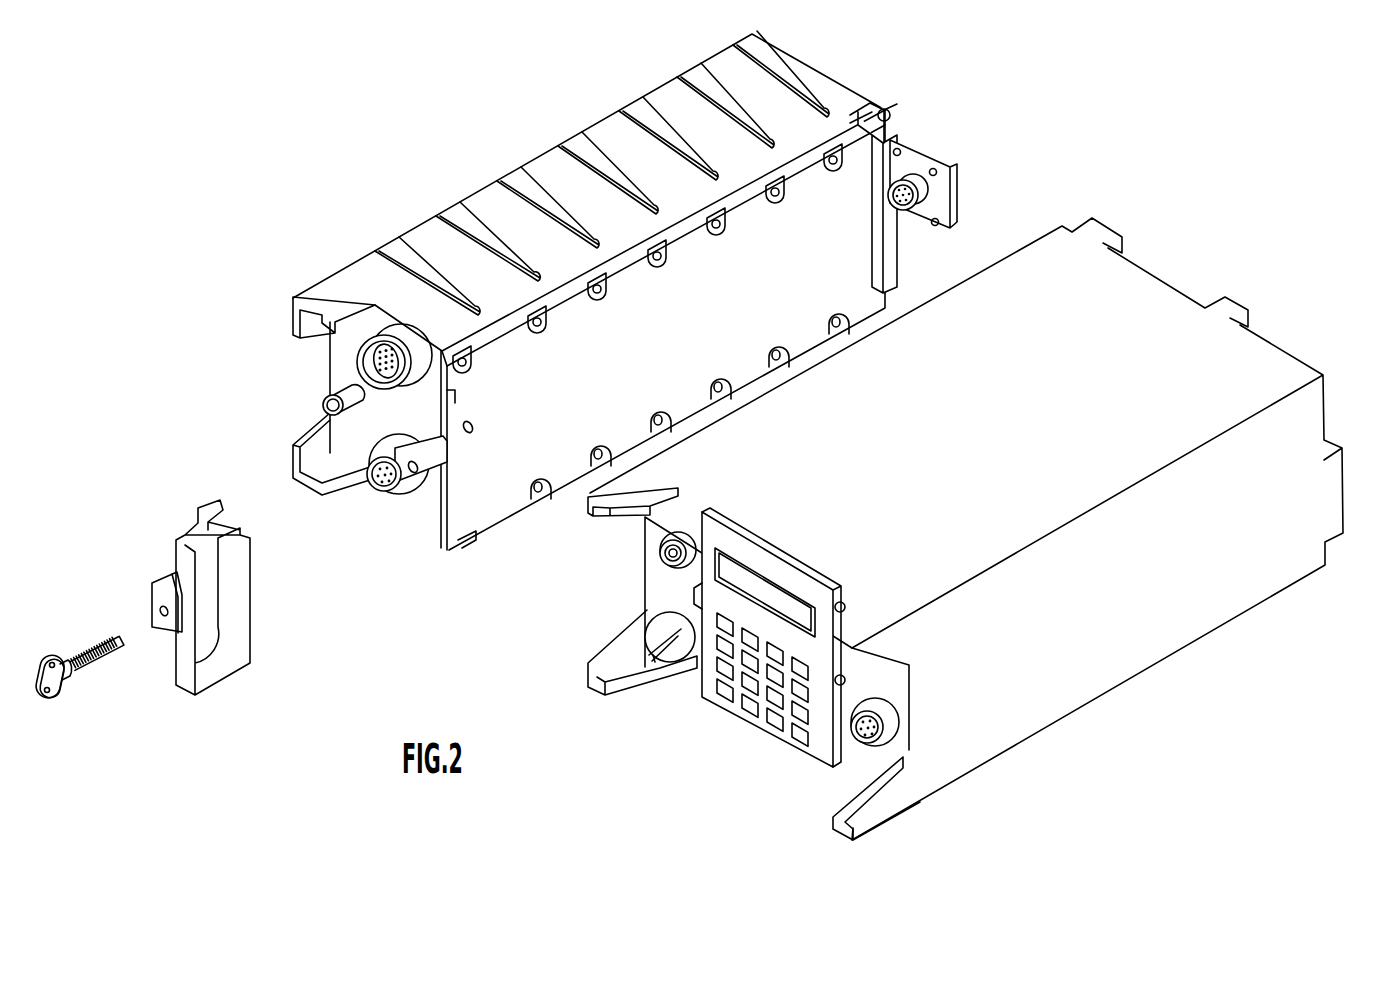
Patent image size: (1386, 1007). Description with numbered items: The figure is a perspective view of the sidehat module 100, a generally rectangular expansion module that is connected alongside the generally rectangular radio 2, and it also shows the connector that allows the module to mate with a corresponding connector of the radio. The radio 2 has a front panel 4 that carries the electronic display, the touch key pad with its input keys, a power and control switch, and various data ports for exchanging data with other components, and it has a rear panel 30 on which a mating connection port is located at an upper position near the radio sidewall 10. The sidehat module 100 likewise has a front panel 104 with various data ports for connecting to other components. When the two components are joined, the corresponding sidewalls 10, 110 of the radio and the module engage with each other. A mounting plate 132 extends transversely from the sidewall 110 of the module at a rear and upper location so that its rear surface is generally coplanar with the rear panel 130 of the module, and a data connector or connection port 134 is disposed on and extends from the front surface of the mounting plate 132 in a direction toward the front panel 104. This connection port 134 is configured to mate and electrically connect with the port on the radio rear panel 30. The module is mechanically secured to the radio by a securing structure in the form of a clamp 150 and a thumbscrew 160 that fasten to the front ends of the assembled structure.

The radio 2 is at (1267, 410).
The front panel 4 is at (650, 580).
The sidewall 10 is at (976, 501).
The rear panel 30 is at (1157, 273).
The sidehat module 100 is at (630, 290).
The front panel 104 is at (352, 367).
The sidewall 110 is at (913, 169).
The rear panel 130 is at (817, 67).
The mounting plate 132 is at (940, 200).
The connection port 134 is at (915, 180).
The clamp 150 is at (237, 687).
The thumbscrew 160 is at (102, 675).